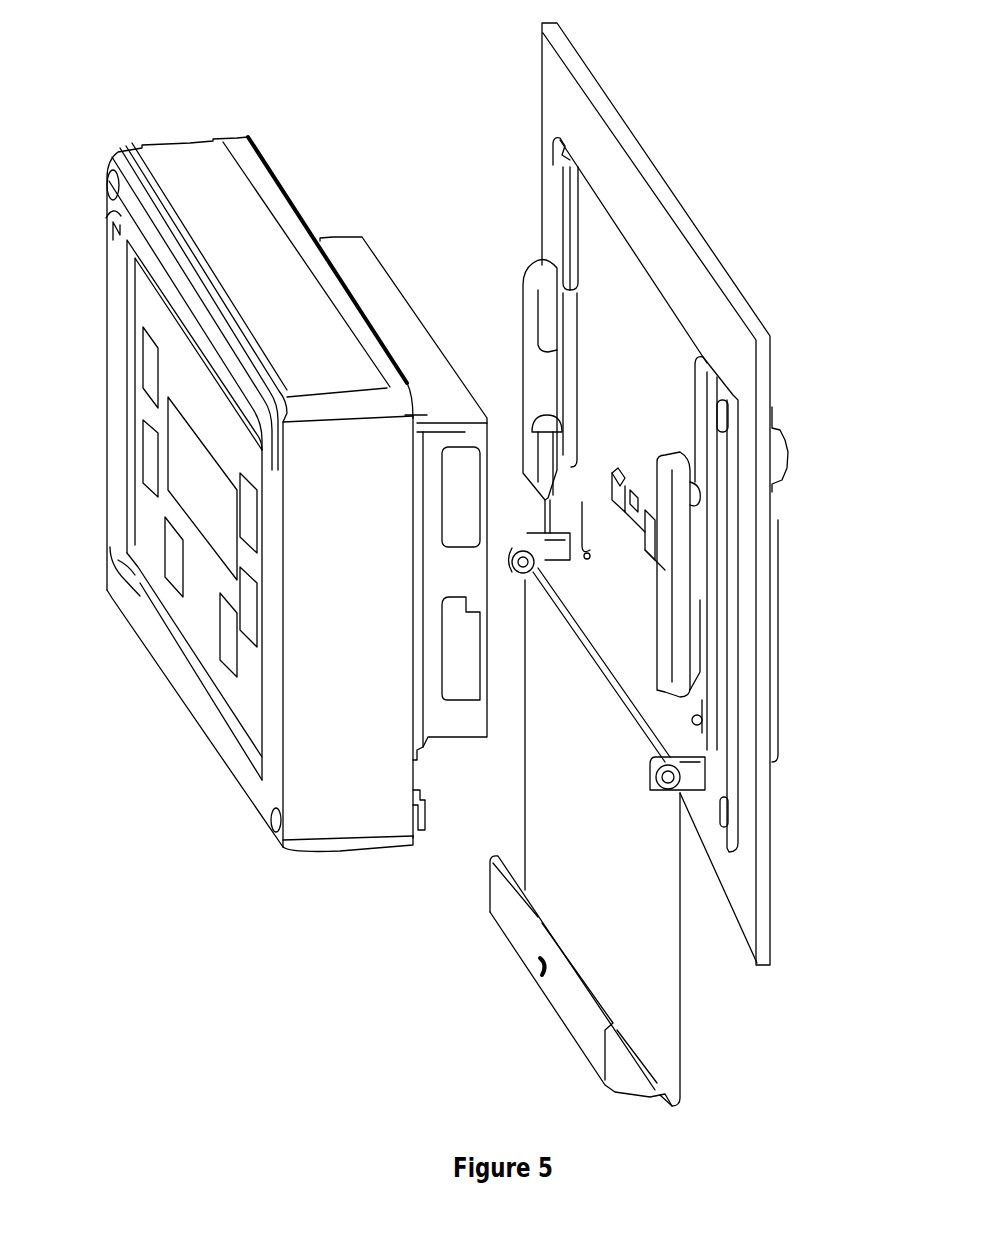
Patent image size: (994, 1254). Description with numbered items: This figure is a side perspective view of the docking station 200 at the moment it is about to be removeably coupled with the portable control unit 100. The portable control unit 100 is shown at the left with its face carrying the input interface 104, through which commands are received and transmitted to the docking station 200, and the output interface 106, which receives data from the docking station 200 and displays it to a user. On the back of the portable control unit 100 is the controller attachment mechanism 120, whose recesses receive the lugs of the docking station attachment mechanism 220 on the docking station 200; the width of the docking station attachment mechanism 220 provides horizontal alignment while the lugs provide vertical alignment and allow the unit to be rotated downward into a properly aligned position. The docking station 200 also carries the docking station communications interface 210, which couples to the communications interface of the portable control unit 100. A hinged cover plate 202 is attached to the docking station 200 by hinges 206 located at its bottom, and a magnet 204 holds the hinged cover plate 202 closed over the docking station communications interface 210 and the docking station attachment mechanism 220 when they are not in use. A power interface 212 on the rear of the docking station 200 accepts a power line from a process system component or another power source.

The portable control unit 100 is at (162, 155).
The input interface 104 is at (250, 657).
The output interface 106 is at (200, 530).
The controller attachment mechanism 120 is at (487, 677).
The docking station 200 is at (620, 117).
The hinged cover plate 202 is at (681, 1017).
The magnet 204 is at (538, 982).
The hinges 206 is at (681, 795).
The docking station communications interface 210 is at (615, 470).
The power interface 212 is at (788, 462).
The docking station attachment mechanism 220 is at (520, 280).